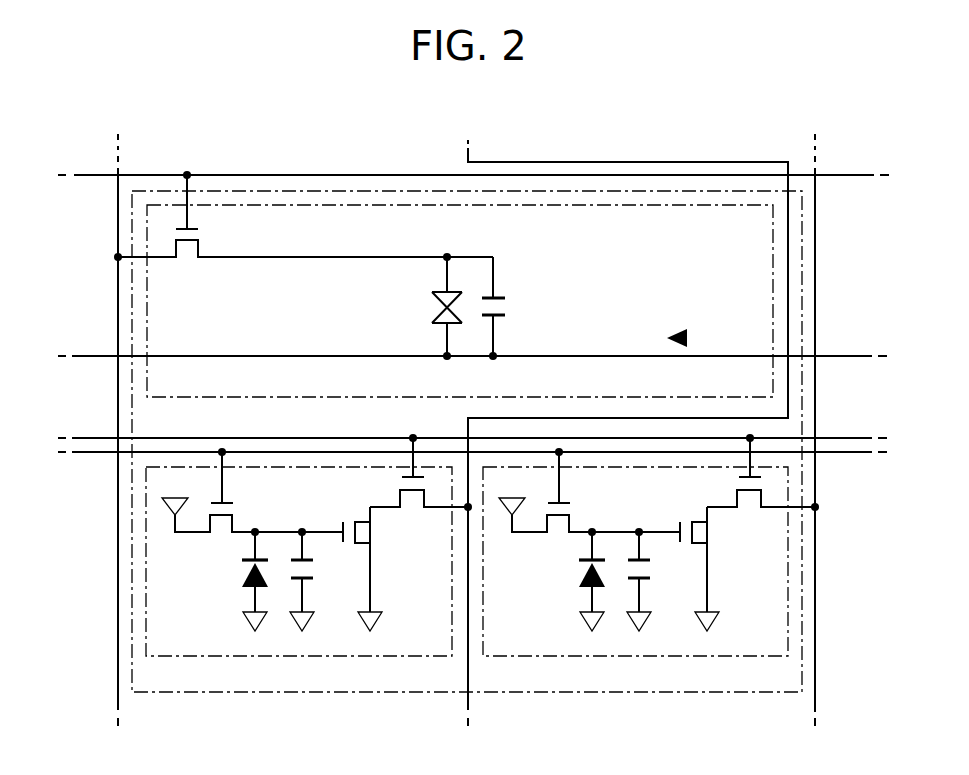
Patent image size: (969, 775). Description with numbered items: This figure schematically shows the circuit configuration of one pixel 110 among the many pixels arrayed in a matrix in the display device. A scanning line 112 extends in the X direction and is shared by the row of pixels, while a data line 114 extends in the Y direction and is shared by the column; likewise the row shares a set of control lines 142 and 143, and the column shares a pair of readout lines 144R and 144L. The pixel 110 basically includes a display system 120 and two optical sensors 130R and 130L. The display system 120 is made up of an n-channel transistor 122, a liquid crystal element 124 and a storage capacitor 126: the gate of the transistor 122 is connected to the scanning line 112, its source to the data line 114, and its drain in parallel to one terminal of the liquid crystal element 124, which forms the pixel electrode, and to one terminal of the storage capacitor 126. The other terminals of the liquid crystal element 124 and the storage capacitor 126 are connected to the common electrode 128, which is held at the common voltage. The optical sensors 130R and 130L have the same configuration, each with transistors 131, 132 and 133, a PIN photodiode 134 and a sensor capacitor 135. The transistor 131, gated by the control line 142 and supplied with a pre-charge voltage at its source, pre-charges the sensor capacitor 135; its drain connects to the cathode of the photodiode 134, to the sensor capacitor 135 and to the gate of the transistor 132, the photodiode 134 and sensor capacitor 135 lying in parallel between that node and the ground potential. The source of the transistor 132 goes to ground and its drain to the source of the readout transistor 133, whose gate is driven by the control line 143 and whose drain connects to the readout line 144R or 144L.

The pixel 110 is at (248, 692).
The scanning line 112 is at (86, 175).
The data line 114 is at (120, 150).
The display system 120 is at (247, 397).
The n-channel transistor 122 is at (200, 243).
The liquid crystal element 124 is at (432, 306).
The storage capacitor 126 is at (508, 306).
The common electrode 128 is at (828, 358).
The optical sensor 130R is at (248, 656).
The optical sensor 130L is at (593, 657).
The transistor 131 is at (234, 516).
The transistor 132 is at (396, 520).
The readout transistor 133 is at (398, 495).
The PIN photodiode 134 is at (247, 580).
The sensor capacitor 135 is at (309, 568).
The control line 142 is at (86, 474).
The control line 143 is at (62, 437).
The readout line 144R is at (464, 151).
The readout line 144L is at (820, 162).